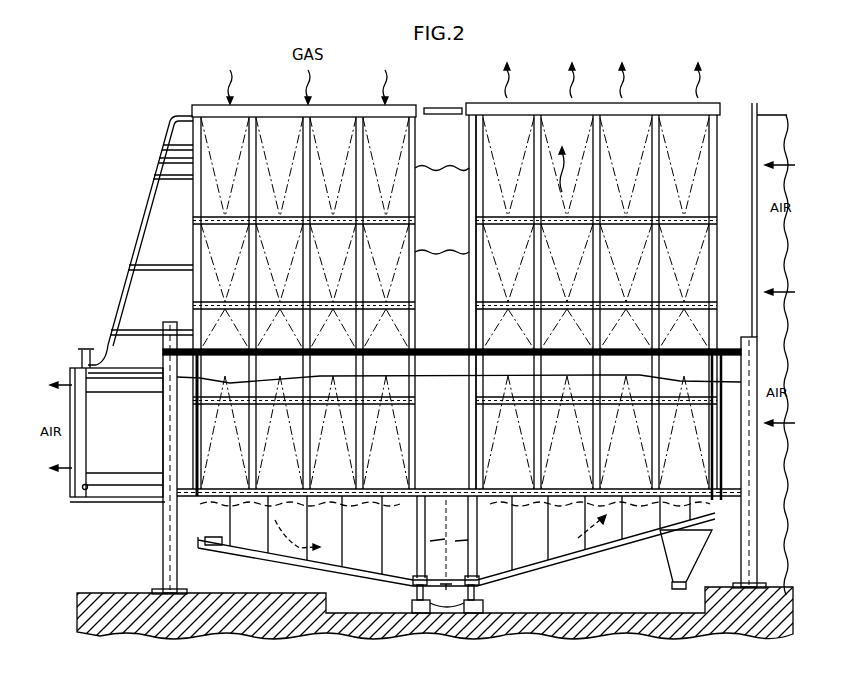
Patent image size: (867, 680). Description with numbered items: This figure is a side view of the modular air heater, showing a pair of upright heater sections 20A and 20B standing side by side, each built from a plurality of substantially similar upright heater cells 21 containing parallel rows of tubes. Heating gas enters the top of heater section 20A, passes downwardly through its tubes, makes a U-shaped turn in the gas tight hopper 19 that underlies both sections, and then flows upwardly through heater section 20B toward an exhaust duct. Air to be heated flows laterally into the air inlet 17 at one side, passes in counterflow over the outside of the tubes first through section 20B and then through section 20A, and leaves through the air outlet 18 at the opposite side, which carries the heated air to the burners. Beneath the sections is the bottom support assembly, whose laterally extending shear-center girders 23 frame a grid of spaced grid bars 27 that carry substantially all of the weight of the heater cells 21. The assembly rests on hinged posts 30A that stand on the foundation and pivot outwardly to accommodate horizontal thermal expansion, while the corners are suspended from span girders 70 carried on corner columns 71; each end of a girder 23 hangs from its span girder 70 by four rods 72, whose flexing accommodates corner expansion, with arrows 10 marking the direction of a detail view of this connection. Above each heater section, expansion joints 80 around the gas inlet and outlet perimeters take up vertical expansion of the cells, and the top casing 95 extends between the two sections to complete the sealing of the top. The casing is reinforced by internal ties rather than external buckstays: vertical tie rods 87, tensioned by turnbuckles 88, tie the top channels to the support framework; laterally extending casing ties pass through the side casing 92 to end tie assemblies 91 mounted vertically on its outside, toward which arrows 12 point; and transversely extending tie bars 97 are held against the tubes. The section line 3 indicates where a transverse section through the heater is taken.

The section line 3- 3 is at (688, 95).
The gas passages 10 is at (735, 456).
The gas flow lanes 12 is at (555, 254).
The air inlet 17 is at (805, 265).
The air outlet 18 is at (83, 489).
The gas tight hopper 19 is at (606, 554).
The heater section 20A is at (226, 133).
The heater section 20B is at (503, 133).
The heater cells 21 is at (337, 128).
The shear-center girders 23 is at (197, 512).
The grid bars 27 is at (362, 500).
The hinged posts 30A is at (485, 597).
The span girders 70 is at (440, 370).
The corner columns 71 is at (163, 543).
The rods 72 is at (205, 446).
The expansion joints 80 is at (276, 105).
The vertical tie rods 87 is at (468, 273).
The turnbuckles 88 is at (472, 123).
The end tie assemblies 91 is at (650, 148).
The side casing 92 is at (212, 282).
The top casing 95 is at (427, 107).
The tie bars 97 is at (345, 300).